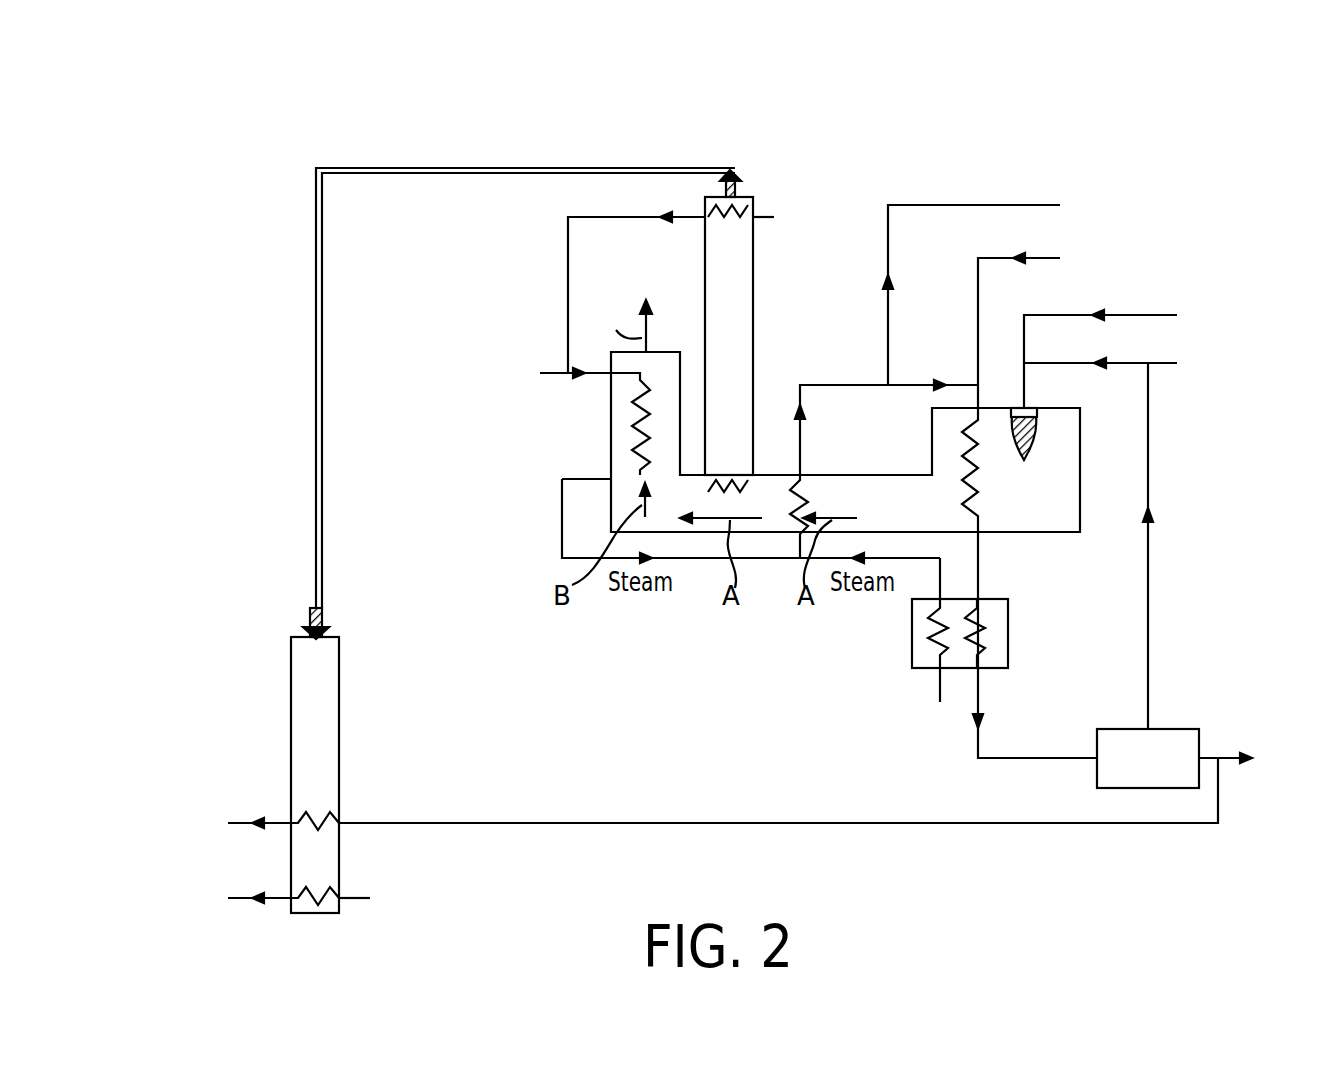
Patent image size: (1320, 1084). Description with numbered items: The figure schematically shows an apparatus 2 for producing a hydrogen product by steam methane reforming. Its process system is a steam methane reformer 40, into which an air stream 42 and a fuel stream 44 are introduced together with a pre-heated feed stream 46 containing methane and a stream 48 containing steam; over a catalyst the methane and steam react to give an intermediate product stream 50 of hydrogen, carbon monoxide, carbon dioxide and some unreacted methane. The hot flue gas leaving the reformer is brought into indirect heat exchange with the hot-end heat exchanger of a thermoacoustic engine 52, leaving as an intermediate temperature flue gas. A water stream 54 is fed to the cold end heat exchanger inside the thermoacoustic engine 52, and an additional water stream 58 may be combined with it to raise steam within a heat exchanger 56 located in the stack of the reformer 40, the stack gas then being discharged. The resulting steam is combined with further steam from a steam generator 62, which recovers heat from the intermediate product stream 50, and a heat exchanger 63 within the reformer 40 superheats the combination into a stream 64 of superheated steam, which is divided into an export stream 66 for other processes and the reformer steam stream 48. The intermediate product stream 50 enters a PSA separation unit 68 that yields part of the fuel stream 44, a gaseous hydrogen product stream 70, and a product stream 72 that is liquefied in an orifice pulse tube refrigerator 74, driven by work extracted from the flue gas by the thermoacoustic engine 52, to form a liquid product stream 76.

The apparatus 2 is at (1132, 132).
The steam methane reformer 40 is at (611, 423).
The air stream 42 is at (1160, 302).
The fuel stream 44 is at (1095, 358).
The pre-heated feed stream 46 is at (1015, 255).
The steam stream 48 is at (912, 385).
The intermediate product stream 50 is at (977, 585).
The thermoacoustic engine 52 is at (725, 268).
The water stream 54 is at (568, 243).
The heat exchanger 56 is at (643, 427).
The additional water stream 58 is at (582, 378).
The steam generator 62 is at (912, 650).
The heat exchanger 63 is at (796, 528).
The superheated steam stream 64 is at (846, 385).
The export stream 66 is at (900, 205).
The PSA separation unit 68 is at (1183, 729).
The gaseous hydrogen product stream 70 is at (1245, 757).
The product stream 72 is at (1100, 823).
The orifice pulse tube refrigerator 74 is at (291, 714).
The liquid product stream 76 is at (235, 823).